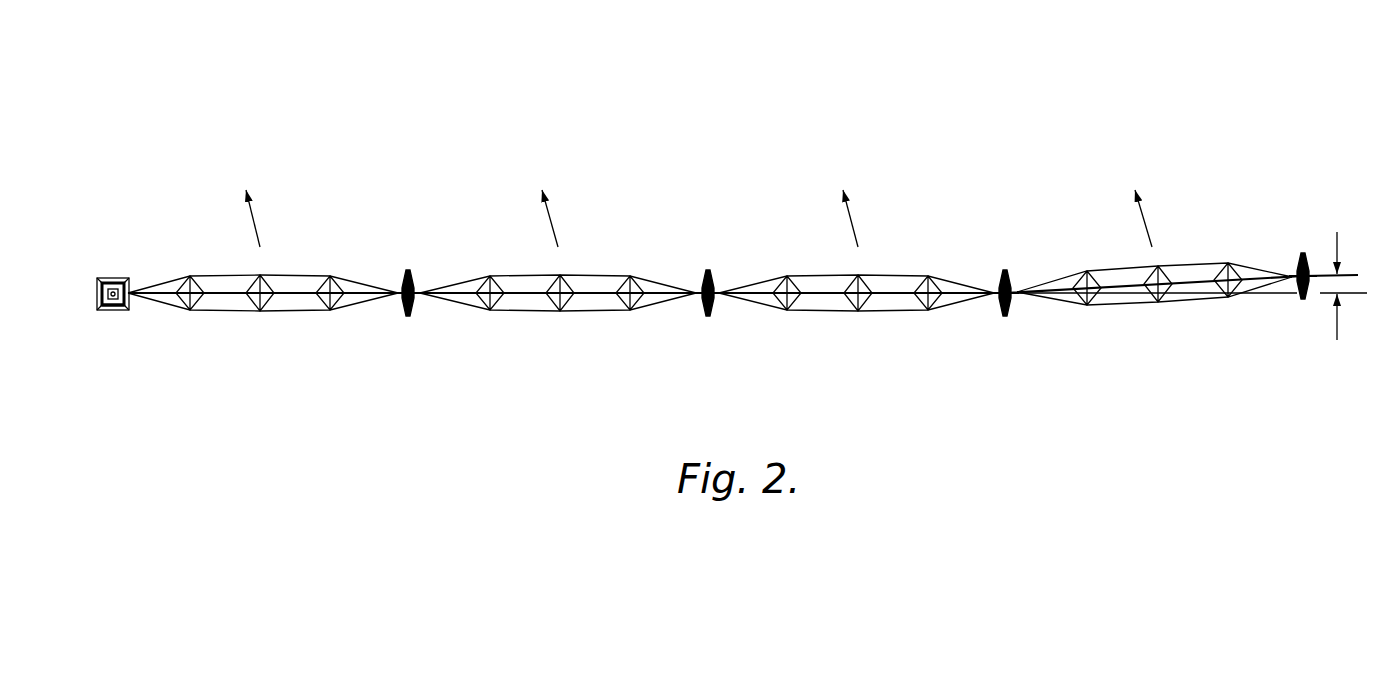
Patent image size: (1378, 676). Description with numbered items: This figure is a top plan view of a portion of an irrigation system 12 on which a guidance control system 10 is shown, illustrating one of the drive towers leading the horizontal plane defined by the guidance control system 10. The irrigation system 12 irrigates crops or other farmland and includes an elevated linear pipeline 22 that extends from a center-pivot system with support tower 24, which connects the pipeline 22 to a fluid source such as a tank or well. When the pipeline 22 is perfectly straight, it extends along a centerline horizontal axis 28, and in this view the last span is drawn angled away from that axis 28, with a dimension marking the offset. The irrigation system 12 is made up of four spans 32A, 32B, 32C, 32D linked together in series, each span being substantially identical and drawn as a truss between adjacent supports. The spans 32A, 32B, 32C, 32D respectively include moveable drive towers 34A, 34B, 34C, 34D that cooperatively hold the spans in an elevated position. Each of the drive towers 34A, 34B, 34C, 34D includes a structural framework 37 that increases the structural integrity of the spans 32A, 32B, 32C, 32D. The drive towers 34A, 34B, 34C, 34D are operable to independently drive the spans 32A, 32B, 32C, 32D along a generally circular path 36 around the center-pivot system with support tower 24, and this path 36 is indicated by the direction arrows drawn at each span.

The guidance control system 10 is at (590, 128).
The irrigation system 12 is at (122, 262).
The elevated linear pipeline 22 is at (223, 303).
The center-pivot system with support tower 24 is at (105, 303).
The centerline horizontal axis 28 is at (1355, 293).
The span 32A is at (308, 240).
The span 32B is at (603, 242).
The span 32C is at (895, 232).
The span 32D is at (1188, 215).
The drive tower 34A is at (422, 248).
The drive tower 34B is at (725, 248).
The drive tower 34C is at (993, 248).
The drive tower 34D is at (1293, 248).
The generally circular path 36 is at (258, 229).
The structural framework 37 is at (310, 310).